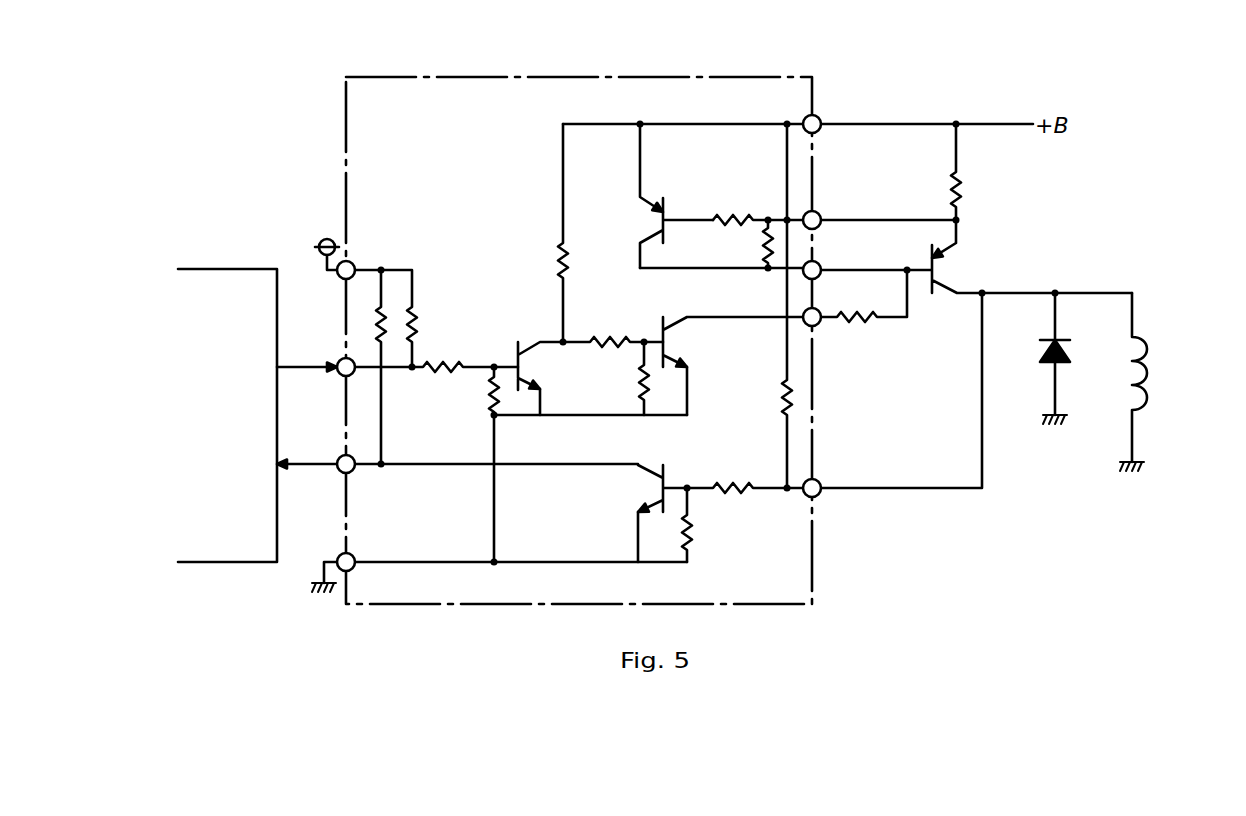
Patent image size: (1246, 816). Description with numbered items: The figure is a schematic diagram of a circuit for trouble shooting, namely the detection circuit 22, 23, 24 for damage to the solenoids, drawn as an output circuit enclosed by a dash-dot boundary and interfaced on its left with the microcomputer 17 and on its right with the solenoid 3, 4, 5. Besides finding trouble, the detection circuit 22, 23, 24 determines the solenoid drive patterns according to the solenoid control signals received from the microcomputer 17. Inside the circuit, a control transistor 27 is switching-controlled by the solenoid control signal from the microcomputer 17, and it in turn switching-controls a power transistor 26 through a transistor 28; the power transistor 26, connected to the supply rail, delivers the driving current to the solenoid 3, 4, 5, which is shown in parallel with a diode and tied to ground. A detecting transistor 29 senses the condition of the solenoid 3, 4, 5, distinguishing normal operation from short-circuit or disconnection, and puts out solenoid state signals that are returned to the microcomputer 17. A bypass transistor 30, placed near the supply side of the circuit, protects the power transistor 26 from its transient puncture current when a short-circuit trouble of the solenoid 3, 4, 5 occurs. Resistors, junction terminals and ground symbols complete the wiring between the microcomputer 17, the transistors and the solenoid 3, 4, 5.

The solenoid 3 is at (1163, 382).
The solenoid 4 is at (1163, 382).
The solenoid 5 is at (1146, 378).
The microcomputer 17 is at (225, 269).
The detection circuit 22 is at (579, 316).
The detection circuit 23 is at (579, 316).
The detection circuit 24 is at (447, 77).
The power transistor 26 is at (946, 272).
The control transistor 27 is at (530, 340).
The transistor 28 is at (683, 338).
The detecting transistor 29 is at (646, 488).
The bypass transistor 30 is at (648, 223).